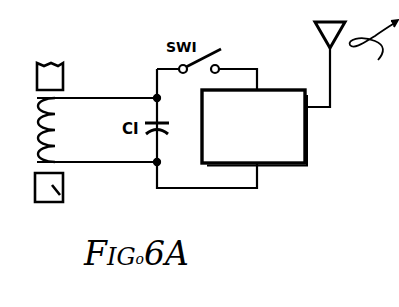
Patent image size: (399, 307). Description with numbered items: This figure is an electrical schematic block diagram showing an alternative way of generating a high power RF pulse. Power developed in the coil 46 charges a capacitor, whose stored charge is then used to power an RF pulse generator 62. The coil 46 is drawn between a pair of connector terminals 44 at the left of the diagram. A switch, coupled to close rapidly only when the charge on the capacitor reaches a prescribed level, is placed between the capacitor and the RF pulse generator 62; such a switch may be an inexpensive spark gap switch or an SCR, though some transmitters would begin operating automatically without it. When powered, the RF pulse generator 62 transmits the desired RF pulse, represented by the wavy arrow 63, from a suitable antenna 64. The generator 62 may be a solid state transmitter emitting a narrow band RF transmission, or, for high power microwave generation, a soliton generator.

The connector terminals 44 is at (65, 78).
The coil 46 is at (49, 150).
The RF pulse generator 62 is at (288, 168).
The wavy arrow 63 is at (372, 46).
The antenna 64 is at (321, 29).